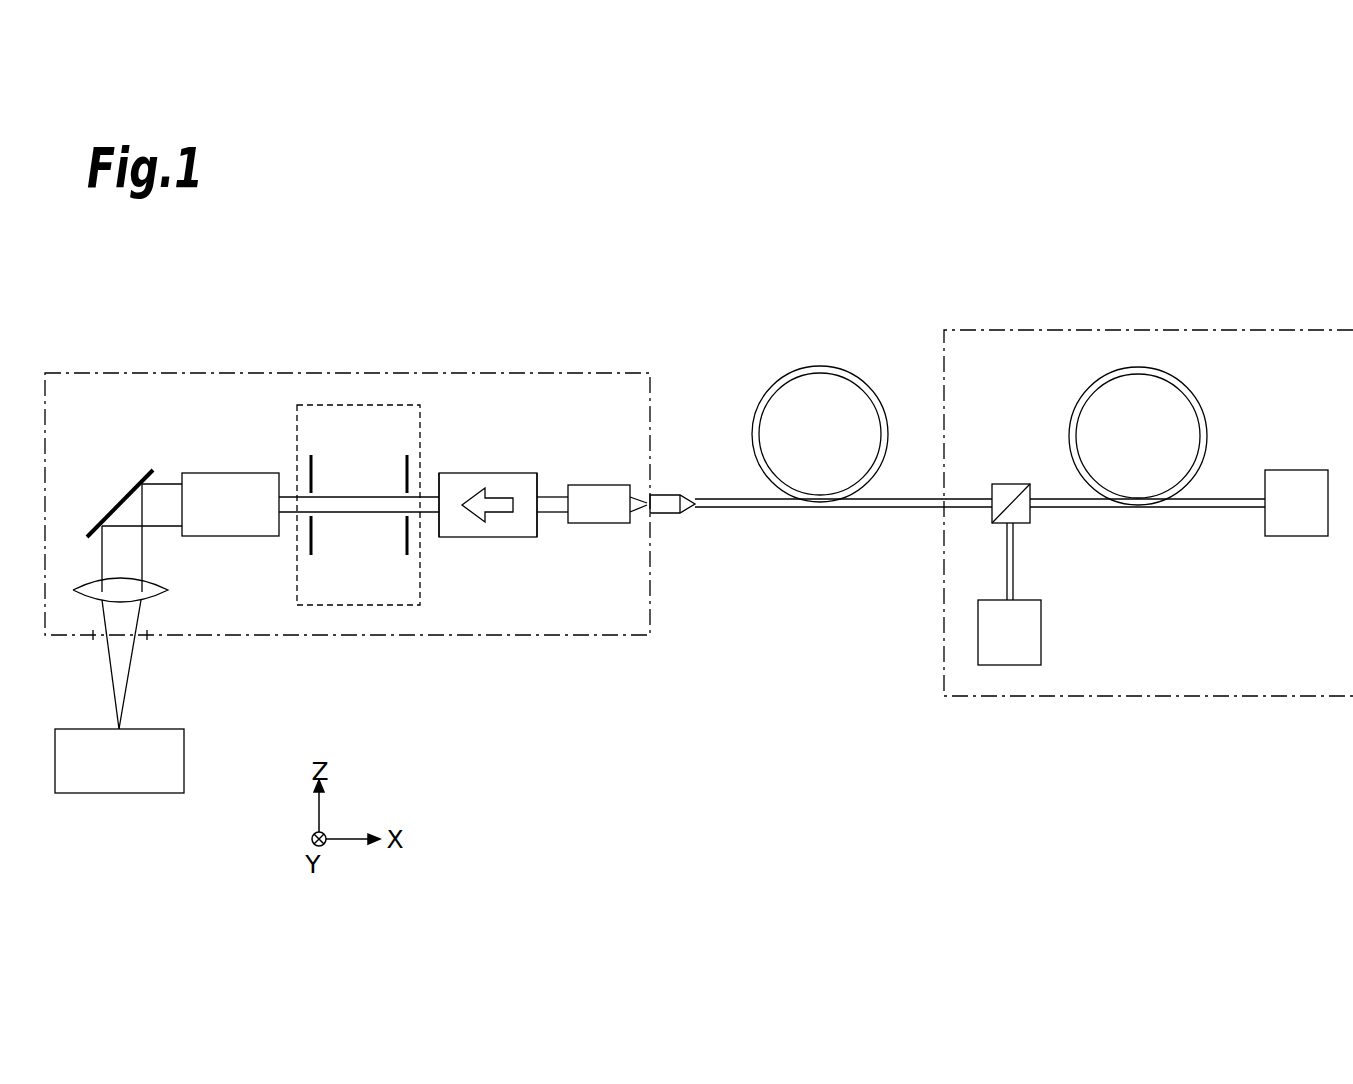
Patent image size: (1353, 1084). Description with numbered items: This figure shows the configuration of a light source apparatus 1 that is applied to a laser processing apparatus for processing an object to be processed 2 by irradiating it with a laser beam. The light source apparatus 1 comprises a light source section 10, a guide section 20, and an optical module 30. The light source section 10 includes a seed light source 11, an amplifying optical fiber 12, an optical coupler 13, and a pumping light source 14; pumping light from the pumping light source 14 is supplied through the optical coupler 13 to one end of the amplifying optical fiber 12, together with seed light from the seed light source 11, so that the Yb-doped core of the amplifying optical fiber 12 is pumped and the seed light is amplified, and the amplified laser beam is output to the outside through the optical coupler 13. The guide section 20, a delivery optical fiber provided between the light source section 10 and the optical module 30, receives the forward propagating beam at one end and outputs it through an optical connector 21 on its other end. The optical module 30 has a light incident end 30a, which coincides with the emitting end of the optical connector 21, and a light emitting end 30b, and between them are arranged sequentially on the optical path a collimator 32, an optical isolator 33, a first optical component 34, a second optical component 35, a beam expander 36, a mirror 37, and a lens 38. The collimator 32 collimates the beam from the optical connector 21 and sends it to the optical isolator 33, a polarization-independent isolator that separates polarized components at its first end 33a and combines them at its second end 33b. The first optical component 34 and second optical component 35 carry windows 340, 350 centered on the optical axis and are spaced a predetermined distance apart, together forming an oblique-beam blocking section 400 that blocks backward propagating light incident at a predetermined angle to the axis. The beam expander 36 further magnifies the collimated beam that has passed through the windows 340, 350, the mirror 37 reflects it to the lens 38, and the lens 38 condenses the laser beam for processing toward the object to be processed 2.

The light source apparatus 1 is at (851, 212).
The object to be processed 2 is at (184, 760).
The light source section 10 is at (1296, 330).
The seed light source 11 is at (1295, 470).
The amplifying optical fiber 12 is at (1184, 384).
The optical coupler 13 is at (1010, 484).
The pumping light source 14 is at (1041, 630).
The guide section 20 is at (870, 386).
The optical connector 21 is at (665, 515).
The optical module 30 is at (587, 373).
The light incident end 30a is at (647, 499).
The light emitting end 30b is at (140, 640).
The collimator 32 is at (600, 523).
The optical isolator 33 is at (500, 537).
The first end 33a is at (537, 480).
The second end 33b is at (439, 480).
The first optical component 34 is at (407, 540).
The second optical component 35 is at (314, 540).
The beam expander 36 is at (249, 536).
The mirror 37 is at (113, 511).
The lens 38 is at (160, 598).
The window 340 is at (402, 503).
The window 350 is at (307, 503).
The oblique-beam blocking section 400 is at (398, 405).